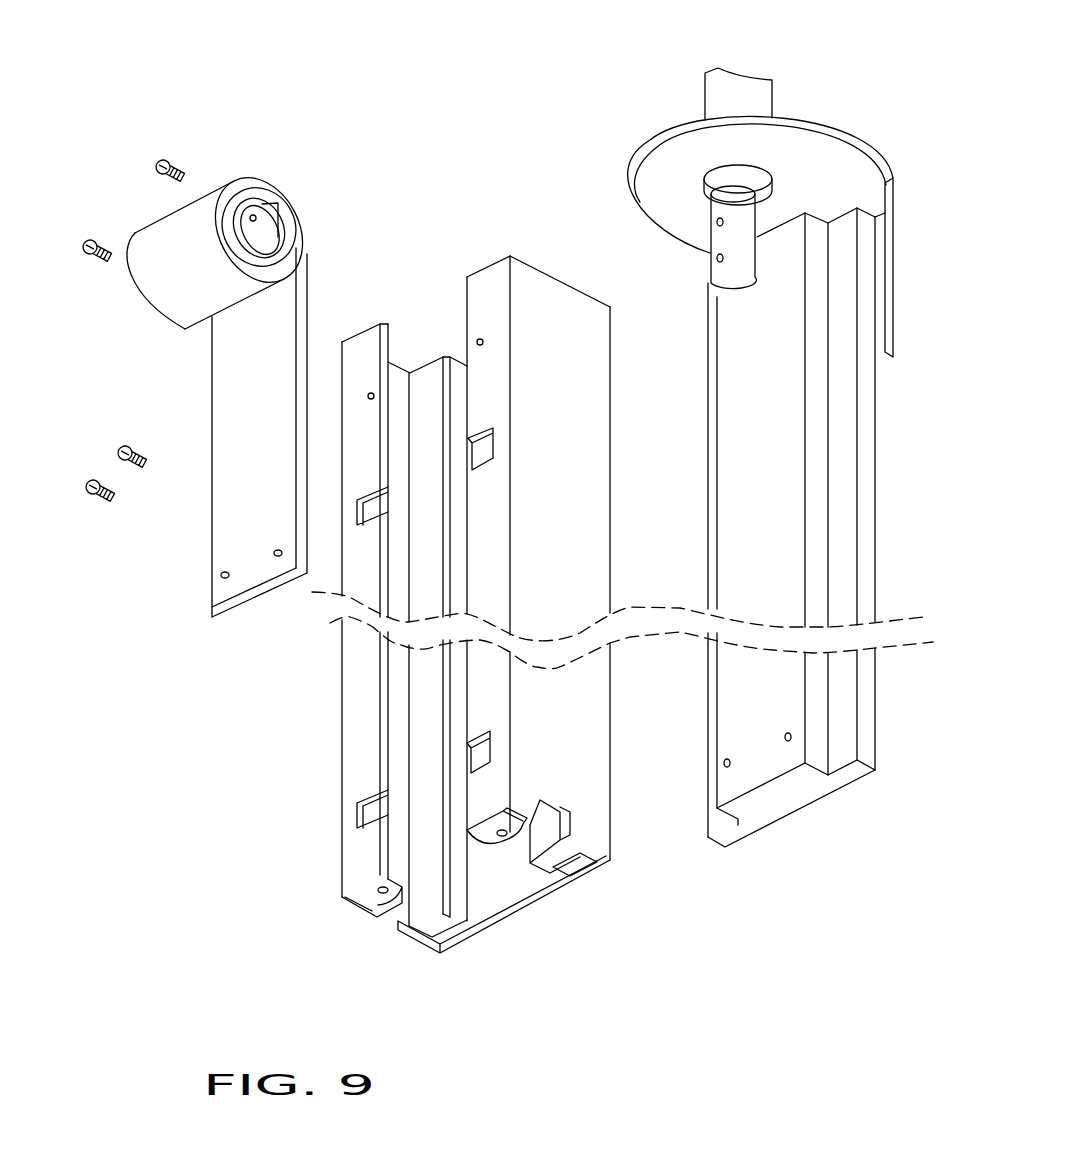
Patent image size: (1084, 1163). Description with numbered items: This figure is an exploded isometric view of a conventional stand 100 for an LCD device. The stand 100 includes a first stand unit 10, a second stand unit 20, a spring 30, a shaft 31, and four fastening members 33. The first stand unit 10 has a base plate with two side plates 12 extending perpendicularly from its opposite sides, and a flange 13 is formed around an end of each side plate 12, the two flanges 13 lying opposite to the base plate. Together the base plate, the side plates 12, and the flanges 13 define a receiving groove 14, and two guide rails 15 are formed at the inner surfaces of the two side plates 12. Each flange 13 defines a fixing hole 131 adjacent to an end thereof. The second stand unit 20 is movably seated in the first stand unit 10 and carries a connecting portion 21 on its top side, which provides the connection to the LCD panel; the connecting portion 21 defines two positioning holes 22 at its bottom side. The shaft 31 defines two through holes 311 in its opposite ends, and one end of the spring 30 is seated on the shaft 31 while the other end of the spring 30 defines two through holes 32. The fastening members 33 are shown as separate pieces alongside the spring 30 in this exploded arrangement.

The stand 100 is at (515, 67).
The first stand unit 10 is at (489, 560).
The side plate 12 is at (548, 322).
The flange 13 is at (494, 288).
The fixing hole 131 is at (371, 393).
The receiving groove 14 is at (397, 730).
The guide rail 15 is at (418, 555).
The second stand unit 20 is at (843, 418).
The connecting portion 21 is at (805, 152).
The positioning hole 22 is at (788, 741).
The spring 30 is at (168, 282).
The shaft 31 is at (273, 213).
The through hole 311 is at (253, 215).
The through hole 32 is at (274, 553).
The fastening member 33 is at (88, 240).